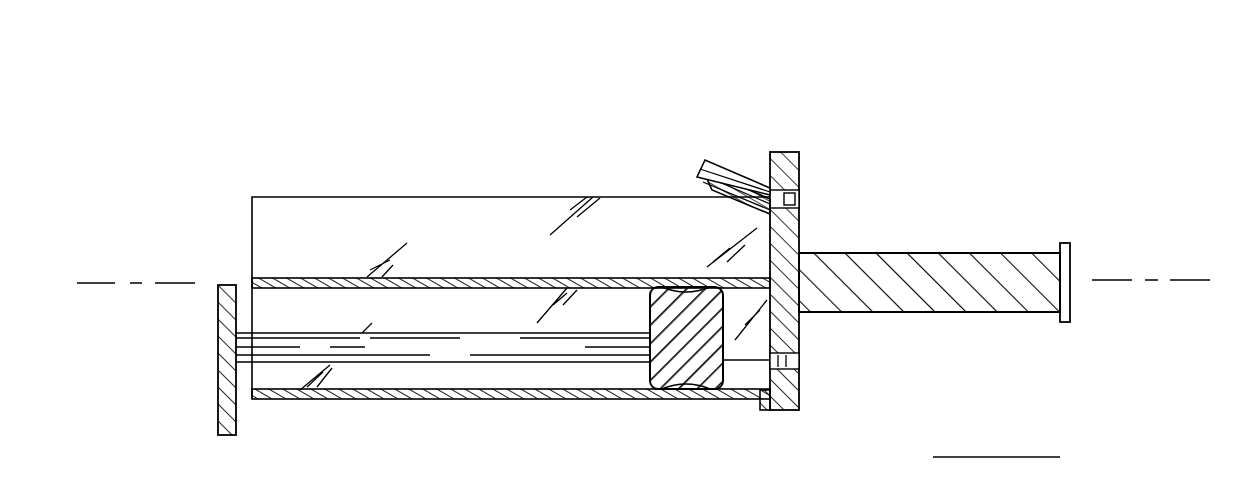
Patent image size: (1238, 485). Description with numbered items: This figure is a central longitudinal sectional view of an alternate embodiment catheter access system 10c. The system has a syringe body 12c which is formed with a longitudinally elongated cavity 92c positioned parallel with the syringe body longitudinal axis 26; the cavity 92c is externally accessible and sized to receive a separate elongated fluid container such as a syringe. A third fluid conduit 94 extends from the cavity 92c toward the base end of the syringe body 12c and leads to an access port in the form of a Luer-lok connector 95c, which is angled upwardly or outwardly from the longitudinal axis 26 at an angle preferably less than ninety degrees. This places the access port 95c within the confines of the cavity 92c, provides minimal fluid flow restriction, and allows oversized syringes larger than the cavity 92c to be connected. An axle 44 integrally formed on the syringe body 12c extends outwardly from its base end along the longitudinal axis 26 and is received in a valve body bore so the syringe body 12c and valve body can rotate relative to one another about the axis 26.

The catheter access system 10c is at (722, 52).
The longitudinally elongated cavity 92c is at (437, 166).
The syringe body 12c is at (284, 222).
The syringe body longitudinal axis 26 is at (97, 283).
The Luer-lok connector 95c is at (738, 165).
The fluid conduit 94 is at (797, 200).
The axle 44 is at (962, 278).